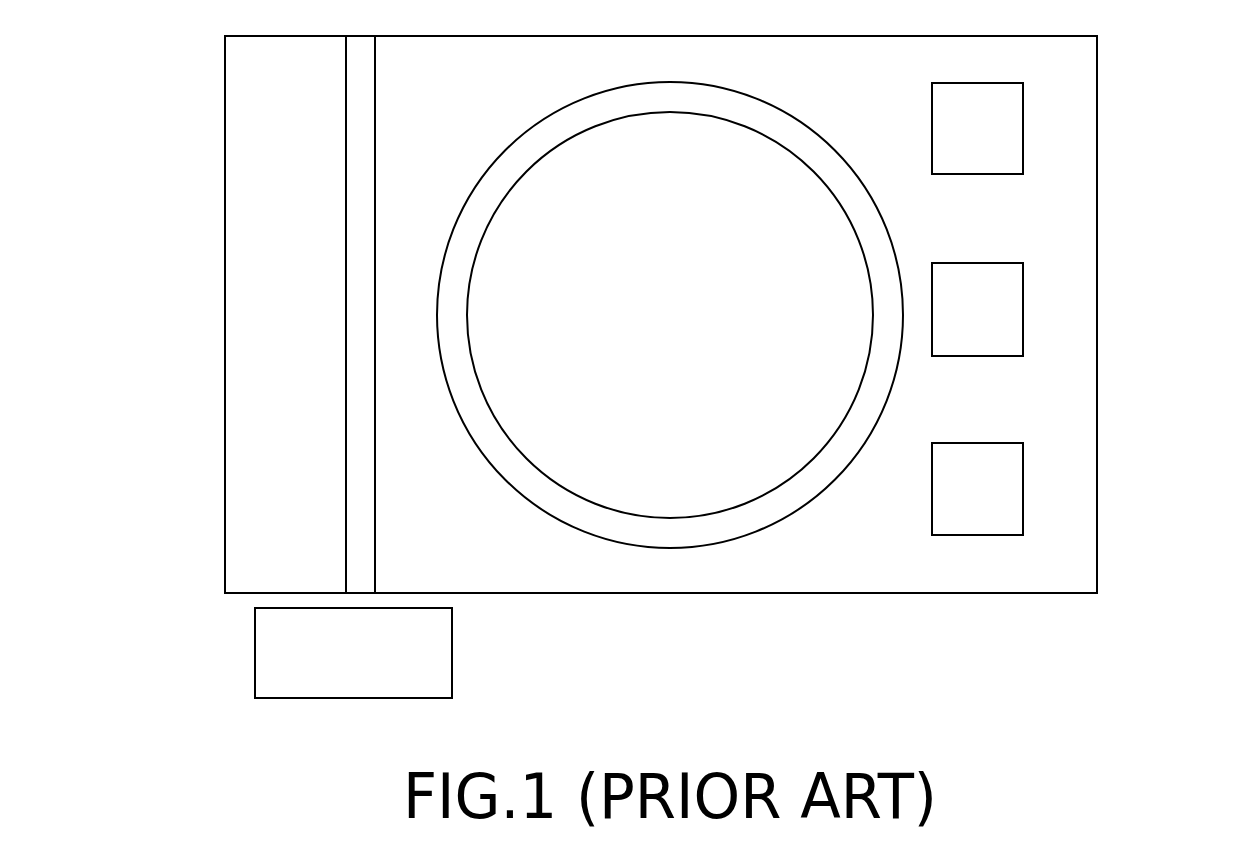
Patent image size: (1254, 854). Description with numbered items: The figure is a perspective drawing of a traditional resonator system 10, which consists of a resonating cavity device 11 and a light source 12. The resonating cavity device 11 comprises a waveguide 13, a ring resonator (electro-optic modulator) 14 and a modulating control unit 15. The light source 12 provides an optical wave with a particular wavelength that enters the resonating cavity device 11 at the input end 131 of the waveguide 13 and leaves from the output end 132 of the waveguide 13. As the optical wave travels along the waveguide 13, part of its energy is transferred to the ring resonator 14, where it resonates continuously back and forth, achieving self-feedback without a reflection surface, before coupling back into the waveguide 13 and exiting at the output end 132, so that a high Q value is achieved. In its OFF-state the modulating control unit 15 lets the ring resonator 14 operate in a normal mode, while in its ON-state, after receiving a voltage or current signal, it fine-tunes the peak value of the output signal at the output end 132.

The resonator system 10 is at (1122, 753).
The resonating cavity device 11 is at (221, 227).
The light source 12 is at (258, 660).
The waveguide 13 is at (348, 358).
The input end 131 is at (355, 578).
The output end 132 is at (359, 45).
The ring resonator (electro-optic modulator) 14 is at (747, 533).
The modulating control unit 15 is at (1052, 114).